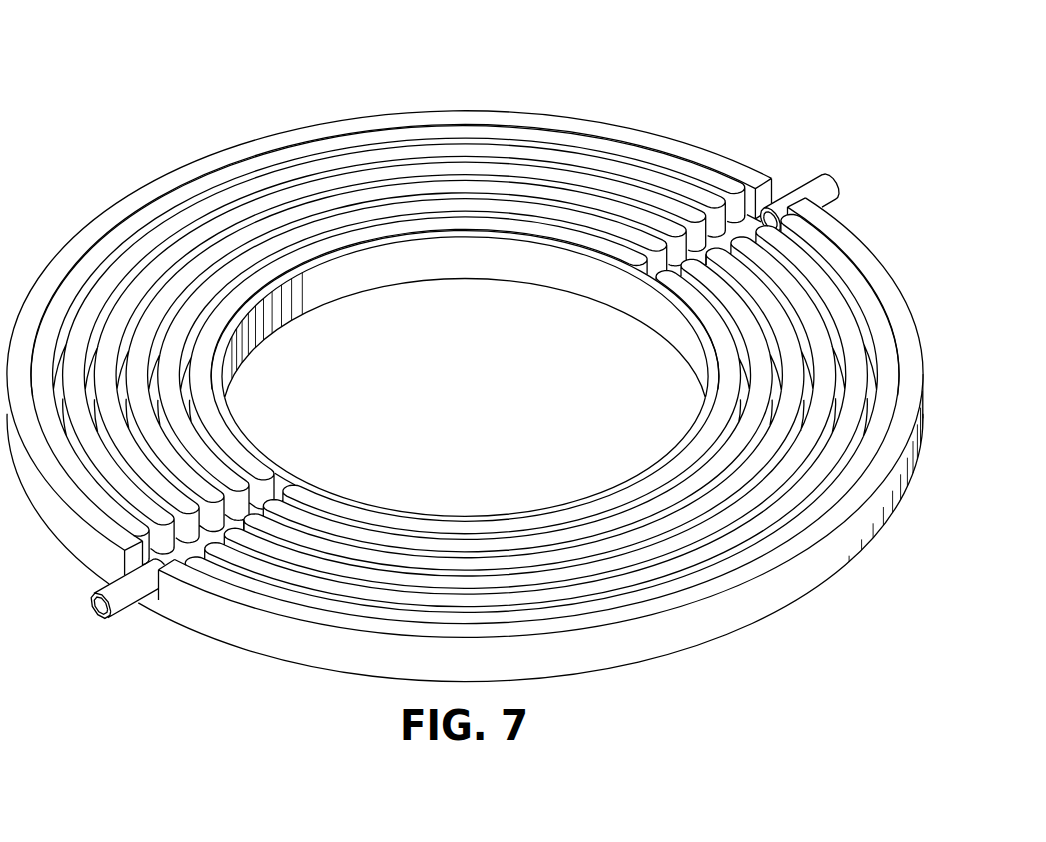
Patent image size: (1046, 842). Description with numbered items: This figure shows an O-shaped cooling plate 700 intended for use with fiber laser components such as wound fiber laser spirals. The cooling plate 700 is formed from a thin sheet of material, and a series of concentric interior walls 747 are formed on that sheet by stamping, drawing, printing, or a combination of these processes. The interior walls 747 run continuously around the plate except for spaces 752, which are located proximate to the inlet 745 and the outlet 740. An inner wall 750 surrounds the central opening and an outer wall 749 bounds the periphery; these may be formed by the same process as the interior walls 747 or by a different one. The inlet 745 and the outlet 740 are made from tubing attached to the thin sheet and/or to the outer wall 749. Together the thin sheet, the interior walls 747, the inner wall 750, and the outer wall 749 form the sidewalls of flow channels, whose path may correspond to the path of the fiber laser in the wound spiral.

The O-shaped cooling plate 700 is at (266, 100).
The outlet 740 is at (93, 617).
The inlet 745 is at (832, 172).
The interior walls 747 is at (140, 260).
The outer wall 749 is at (730, 608).
The inner wall 750 is at (365, 272).
The spaces 752 is at (680, 275).